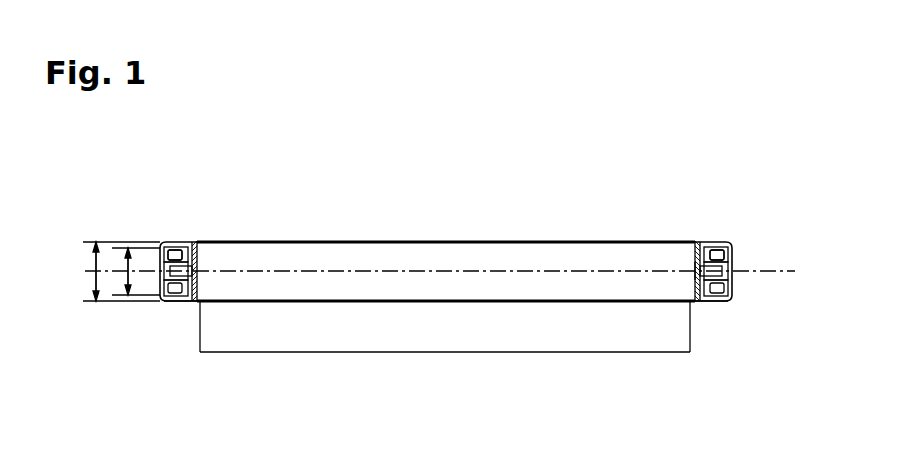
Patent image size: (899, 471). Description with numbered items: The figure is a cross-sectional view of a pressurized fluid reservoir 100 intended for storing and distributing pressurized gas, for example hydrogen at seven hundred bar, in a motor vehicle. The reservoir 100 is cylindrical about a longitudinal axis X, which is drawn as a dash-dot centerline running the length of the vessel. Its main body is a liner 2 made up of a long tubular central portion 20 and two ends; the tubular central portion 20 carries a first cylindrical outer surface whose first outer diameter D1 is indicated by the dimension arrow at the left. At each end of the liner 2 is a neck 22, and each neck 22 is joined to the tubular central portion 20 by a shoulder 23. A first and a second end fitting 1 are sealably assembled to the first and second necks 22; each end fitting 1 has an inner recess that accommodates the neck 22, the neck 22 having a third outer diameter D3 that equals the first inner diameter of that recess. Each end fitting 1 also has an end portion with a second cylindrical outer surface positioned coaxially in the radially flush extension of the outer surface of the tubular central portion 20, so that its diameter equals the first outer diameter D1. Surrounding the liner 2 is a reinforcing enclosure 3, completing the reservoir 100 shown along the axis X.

The pressurized fluid reservoir 100 is at (451, 291).
The liner 2 is at (491, 258).
The end fitting 1 is at (165, 301).
The reinforcing enclosure 3 is at (181, 242).
The neck 22 is at (178, 301).
The shoulder 23 is at (700, 301).
The tubular central portion 20 is at (447, 353).
The longitudinal axis X is at (780, 273).
The first outer diameter D1 is at (92, 272).
The third outer diameter D3 is at (124, 272).